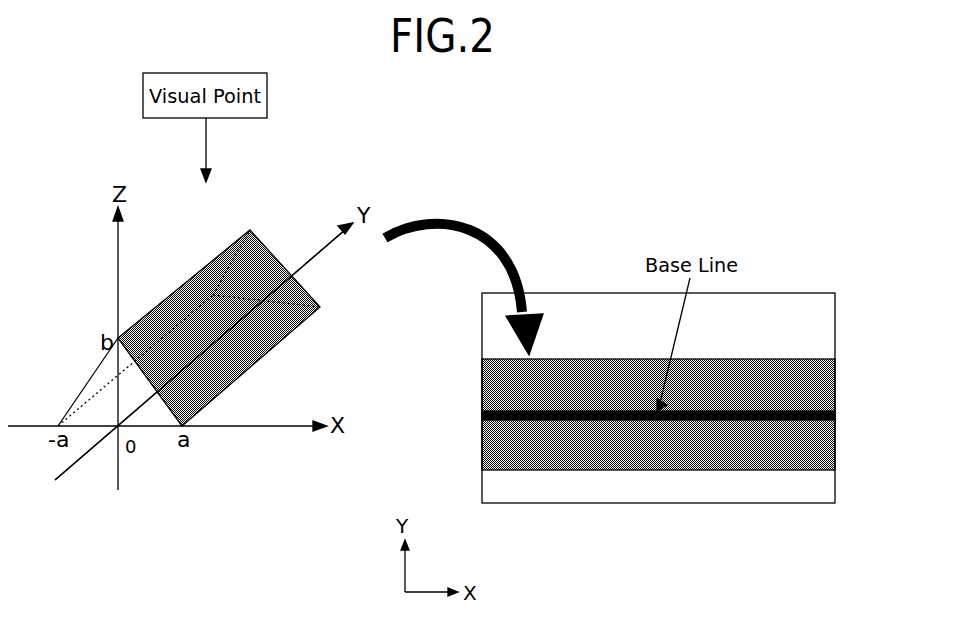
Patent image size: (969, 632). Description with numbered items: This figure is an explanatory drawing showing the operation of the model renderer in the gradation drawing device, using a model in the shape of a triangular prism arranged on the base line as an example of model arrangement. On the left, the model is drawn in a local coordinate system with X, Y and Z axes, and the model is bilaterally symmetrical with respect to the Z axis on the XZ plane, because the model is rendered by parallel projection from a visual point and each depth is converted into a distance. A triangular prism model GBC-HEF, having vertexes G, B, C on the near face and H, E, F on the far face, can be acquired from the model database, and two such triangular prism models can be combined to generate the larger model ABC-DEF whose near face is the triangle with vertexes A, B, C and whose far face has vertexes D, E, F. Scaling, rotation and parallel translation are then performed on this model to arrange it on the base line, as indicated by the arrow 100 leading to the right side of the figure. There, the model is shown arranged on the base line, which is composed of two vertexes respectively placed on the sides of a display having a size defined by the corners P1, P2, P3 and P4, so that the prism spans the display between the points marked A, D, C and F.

The arrow 100 is at (494, 237).
The display vertex P1 is at (458, 294).
The display vertex P2 is at (458, 504).
The display vertex P3 is at (856, 506).
The display vertex P4 is at (855, 294).
The model vertex A is at (255, 387).
The model vertex B is at (88, 366).
The model vertex C is at (323, 439).
The model vertex D is at (527, 324).
The model vertex E is at (250, 217).
The model vertex F is at (590, 389).
The model vertex G is at (105, 415).
The model vertex H is at (261, 290).